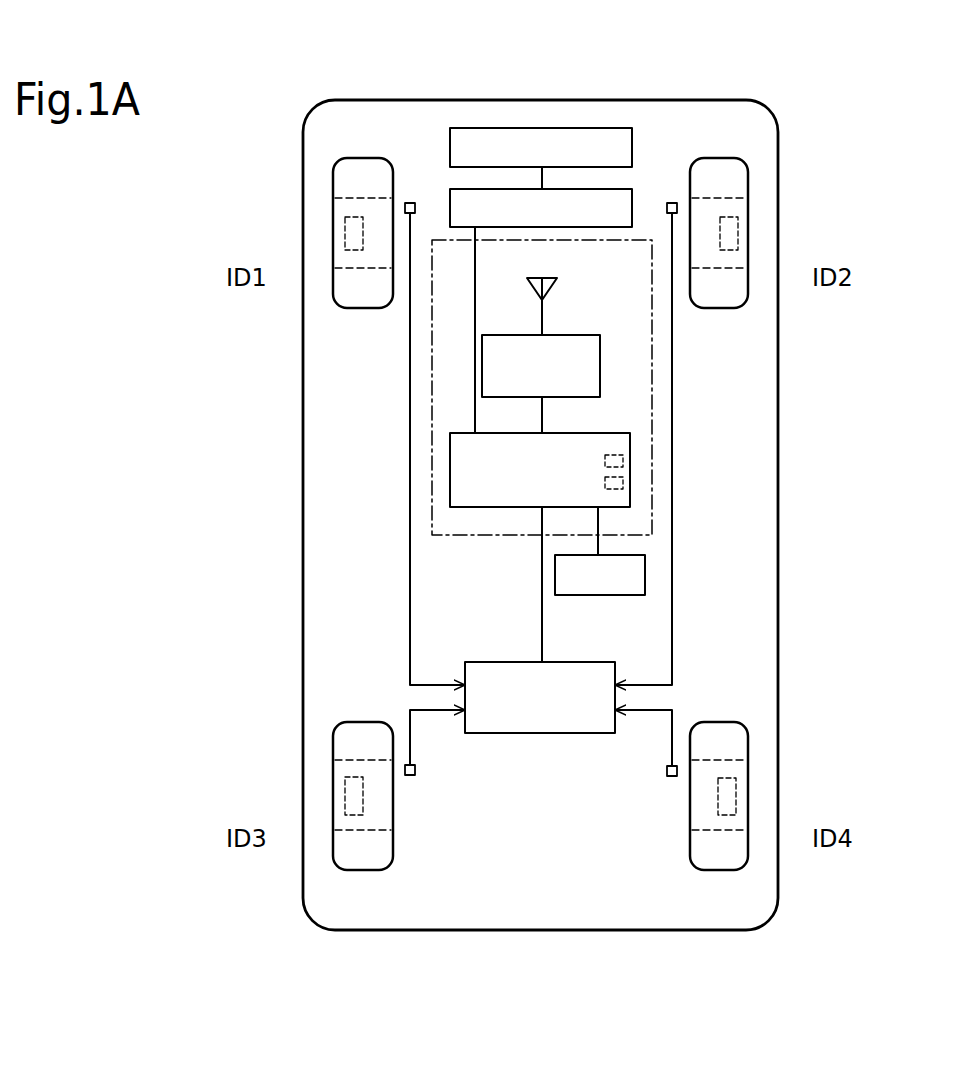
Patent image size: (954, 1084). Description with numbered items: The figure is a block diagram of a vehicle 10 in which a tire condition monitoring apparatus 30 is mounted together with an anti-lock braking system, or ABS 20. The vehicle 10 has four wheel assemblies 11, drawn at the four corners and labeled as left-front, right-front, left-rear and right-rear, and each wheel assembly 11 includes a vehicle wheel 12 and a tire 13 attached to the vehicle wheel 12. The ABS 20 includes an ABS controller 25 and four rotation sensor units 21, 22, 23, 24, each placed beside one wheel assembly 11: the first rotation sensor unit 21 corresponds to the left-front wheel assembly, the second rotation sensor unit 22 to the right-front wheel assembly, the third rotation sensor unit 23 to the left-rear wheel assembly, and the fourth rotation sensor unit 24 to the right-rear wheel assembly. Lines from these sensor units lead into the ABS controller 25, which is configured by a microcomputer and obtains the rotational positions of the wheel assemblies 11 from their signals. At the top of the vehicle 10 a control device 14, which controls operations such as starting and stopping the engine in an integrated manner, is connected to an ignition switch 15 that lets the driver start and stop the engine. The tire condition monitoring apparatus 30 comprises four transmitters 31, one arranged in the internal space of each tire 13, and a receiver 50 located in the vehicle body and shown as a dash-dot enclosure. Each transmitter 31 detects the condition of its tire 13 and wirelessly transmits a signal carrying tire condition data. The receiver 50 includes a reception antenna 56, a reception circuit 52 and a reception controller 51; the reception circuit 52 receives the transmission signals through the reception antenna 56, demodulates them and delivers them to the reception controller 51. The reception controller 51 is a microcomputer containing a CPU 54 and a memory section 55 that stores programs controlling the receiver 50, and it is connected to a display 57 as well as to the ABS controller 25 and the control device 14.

The vehicle 10 is at (778, 90).
The wheel assembly 11 is at (262, 162).
The vehicle wheel 12 is at (340, 193).
The tire 13 is at (345, 181).
The transmitter 31 is at (345, 232).
The first rotation sensor unit 21 is at (410, 202).
The second rotation sensor unit 22 is at (672, 202).
The third rotation sensor unit 23 is at (412, 777).
The fourth rotation sensor unit 24 is at (670, 778).
The ignition switch 15 is at (602, 128).
The control device 14 is at (613, 227).
The anti-lock braking system (ABS) 20 is at (676, 396).
The receiver 50 is at (438, 537).
The reception controller 51 is at (562, 432).
The reception circuit 52 is at (556, 334).
The CPU 54 is at (623, 459).
The memory section 55 is at (623, 481).
The reception antenna 56 is at (548, 272).
The display 57 is at (612, 596).
The ABS controller 25 is at (546, 736).
The tire condition monitoring apparatus 30 is at (686, 620).